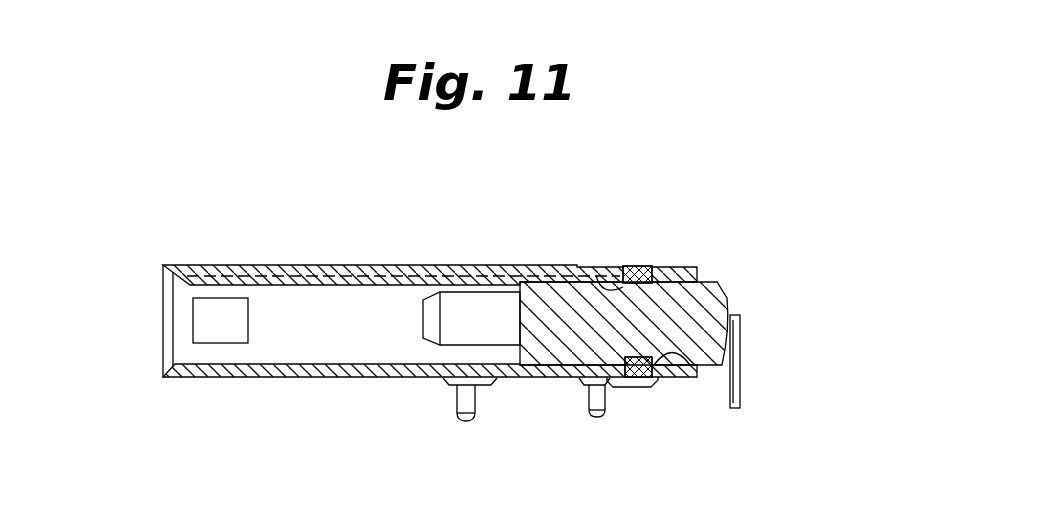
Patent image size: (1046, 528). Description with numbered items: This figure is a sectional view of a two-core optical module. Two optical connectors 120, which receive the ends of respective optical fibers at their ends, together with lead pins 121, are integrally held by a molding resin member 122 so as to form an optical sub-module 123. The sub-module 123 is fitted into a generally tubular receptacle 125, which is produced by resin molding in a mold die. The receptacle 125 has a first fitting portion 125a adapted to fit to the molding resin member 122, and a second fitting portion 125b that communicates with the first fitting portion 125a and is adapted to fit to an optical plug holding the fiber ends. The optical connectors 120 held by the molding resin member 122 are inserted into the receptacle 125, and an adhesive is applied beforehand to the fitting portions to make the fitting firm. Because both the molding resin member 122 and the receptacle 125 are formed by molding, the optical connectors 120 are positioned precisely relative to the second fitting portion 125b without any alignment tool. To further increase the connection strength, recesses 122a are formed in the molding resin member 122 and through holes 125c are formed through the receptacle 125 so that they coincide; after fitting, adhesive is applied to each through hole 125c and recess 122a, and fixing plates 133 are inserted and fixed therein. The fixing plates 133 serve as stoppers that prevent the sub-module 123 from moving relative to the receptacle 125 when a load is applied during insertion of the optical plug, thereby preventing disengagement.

The optical connector 120 is at (452, 298).
The lead pin 121 is at (740, 367).
The molding resin member 122 is at (630, 318).
The recess 122a is at (597, 273).
The optical sub-module 123 is at (768, 309).
The receptacle 125 is at (392, 323).
The first fitting portion 125a is at (512, 262).
The second fitting portion 125b is at (177, 322).
The through hole 125c is at (640, 326).
The fixing plate 133 is at (653, 266).